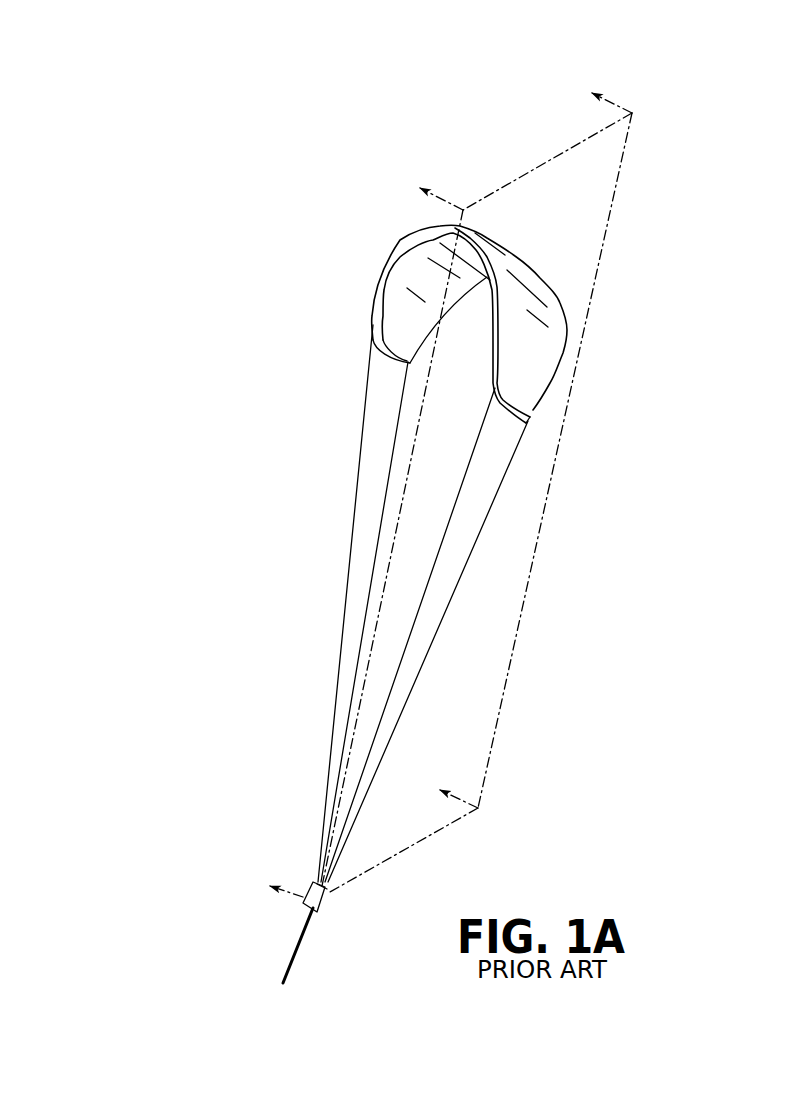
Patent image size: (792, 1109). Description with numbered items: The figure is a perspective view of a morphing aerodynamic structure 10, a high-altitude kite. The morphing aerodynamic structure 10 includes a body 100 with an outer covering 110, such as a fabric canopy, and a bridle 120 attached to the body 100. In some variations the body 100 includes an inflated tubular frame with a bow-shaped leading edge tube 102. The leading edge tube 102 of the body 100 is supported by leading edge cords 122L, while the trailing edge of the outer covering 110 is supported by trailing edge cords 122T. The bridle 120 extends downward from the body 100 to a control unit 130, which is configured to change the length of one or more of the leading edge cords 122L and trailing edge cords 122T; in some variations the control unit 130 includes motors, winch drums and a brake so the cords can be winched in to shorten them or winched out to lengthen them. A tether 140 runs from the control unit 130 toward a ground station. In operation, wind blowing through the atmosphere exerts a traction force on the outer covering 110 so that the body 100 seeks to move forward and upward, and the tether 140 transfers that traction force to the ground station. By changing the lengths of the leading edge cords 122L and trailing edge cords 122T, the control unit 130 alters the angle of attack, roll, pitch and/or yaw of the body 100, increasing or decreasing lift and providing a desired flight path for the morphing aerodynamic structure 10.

The morphing aerodynamic structure 10 is at (650, 107).
The body 100 is at (545, 193).
The leading edge tube 102 is at (397, 267).
The outer covering 110 is at (502, 242).
The bridle 120 is at (417, 603).
The leading edge cords 122L is at (363, 435).
The trailing edge cords 122T is at (408, 387).
The control unit 130 is at (333, 910).
The tether 140 is at (300, 933).